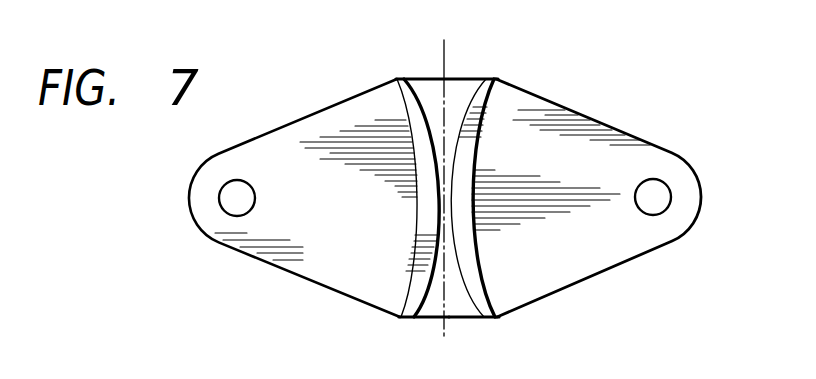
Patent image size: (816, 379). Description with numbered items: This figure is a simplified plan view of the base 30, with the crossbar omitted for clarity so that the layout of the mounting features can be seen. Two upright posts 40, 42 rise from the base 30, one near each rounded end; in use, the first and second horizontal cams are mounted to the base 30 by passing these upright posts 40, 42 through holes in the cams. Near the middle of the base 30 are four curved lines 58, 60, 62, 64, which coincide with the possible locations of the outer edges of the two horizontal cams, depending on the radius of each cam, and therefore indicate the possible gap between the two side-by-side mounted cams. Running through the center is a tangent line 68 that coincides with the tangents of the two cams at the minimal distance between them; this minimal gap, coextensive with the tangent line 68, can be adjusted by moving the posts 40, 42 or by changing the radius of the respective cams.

The base 30 is at (604, 125).
The upright post 40 is at (227, 198).
The upright post 42 is at (662, 198).
The curved line 58 is at (402, 278).
The curved line 60 is at (421, 318).
The curved line 62 is at (473, 318).
The curved line 64 is at (485, 268).
The tangent line 68 is at (446, 60).